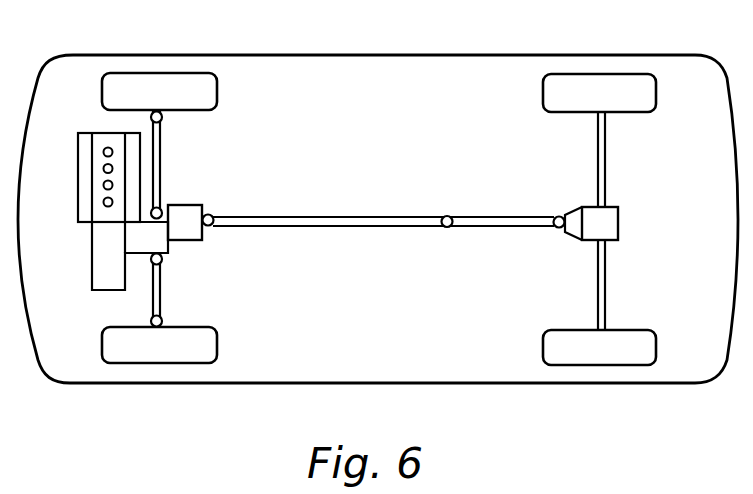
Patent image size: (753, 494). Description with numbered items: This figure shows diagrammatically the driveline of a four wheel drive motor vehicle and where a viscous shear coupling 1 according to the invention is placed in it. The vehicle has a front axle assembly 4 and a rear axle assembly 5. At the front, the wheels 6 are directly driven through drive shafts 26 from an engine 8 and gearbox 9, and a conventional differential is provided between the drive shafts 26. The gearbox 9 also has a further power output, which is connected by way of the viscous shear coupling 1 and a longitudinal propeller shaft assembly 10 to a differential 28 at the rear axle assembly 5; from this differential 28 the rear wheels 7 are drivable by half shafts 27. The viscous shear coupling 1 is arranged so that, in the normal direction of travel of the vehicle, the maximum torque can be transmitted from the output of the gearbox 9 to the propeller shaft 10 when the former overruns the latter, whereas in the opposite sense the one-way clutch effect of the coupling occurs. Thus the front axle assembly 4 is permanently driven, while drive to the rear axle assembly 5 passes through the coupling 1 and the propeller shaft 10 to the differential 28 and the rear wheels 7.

The viscous shear coupling 1 is at (183, 223).
The front axle assembly 4 is at (136, 223).
The rear axle assembly 5 is at (590, 222).
The wheels 6 is at (150, 88).
The rear wheels 7 is at (605, 85).
The engine 8 is at (103, 140).
The gearbox 9 is at (103, 248).
The longitudinal propeller shaft assembly 10 is at (345, 222).
The drive shafts 26 is at (158, 145).
The half shafts 27 is at (600, 143).
The differential 28 is at (605, 223).